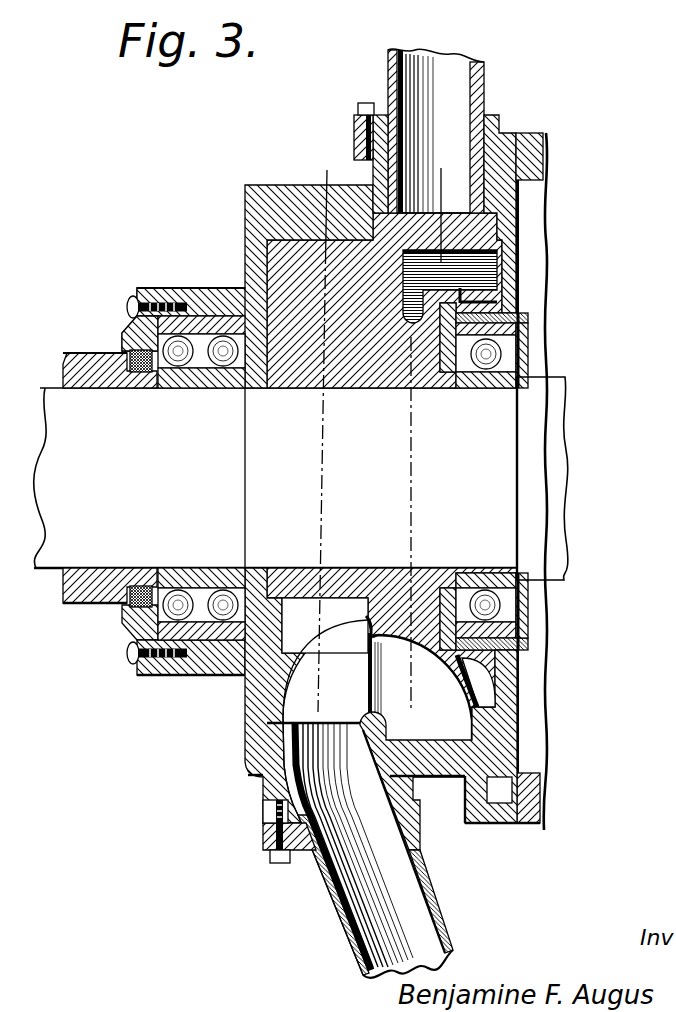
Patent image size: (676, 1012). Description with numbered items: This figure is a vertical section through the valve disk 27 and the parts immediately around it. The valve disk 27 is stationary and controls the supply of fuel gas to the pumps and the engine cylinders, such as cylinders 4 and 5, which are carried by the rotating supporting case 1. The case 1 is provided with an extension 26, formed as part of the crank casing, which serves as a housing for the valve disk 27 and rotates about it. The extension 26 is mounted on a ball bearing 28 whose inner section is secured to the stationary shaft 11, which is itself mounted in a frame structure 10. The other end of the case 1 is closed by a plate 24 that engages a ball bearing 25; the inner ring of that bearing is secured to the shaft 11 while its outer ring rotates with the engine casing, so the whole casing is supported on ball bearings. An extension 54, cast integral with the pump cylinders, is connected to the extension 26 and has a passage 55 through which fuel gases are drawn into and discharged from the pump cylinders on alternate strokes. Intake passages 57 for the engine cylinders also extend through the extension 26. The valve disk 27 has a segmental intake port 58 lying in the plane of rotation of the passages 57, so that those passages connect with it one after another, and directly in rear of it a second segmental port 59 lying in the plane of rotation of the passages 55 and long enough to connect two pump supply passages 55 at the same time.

The supporting case 1 is at (529, 163).
The engine cylinder 4 is at (422, 441).
The engine cylinder 5 is at (322, 429).
The frame structure 10 is at (91, 353).
The shaft 11 is at (549, 400).
The plate 24 is at (509, 262).
The ball bearing 25 is at (493, 353).
The extension 26 is at (257, 207).
The valve disk 27 is at (386, 372).
The ball bearing 28 is at (213, 330).
The extension 54 is at (333, 905).
The passage 55 is at (400, 897).
The passage 57 is at (468, 90).
The port 58 is at (433, 700).
The segmental port 59 is at (324, 660).